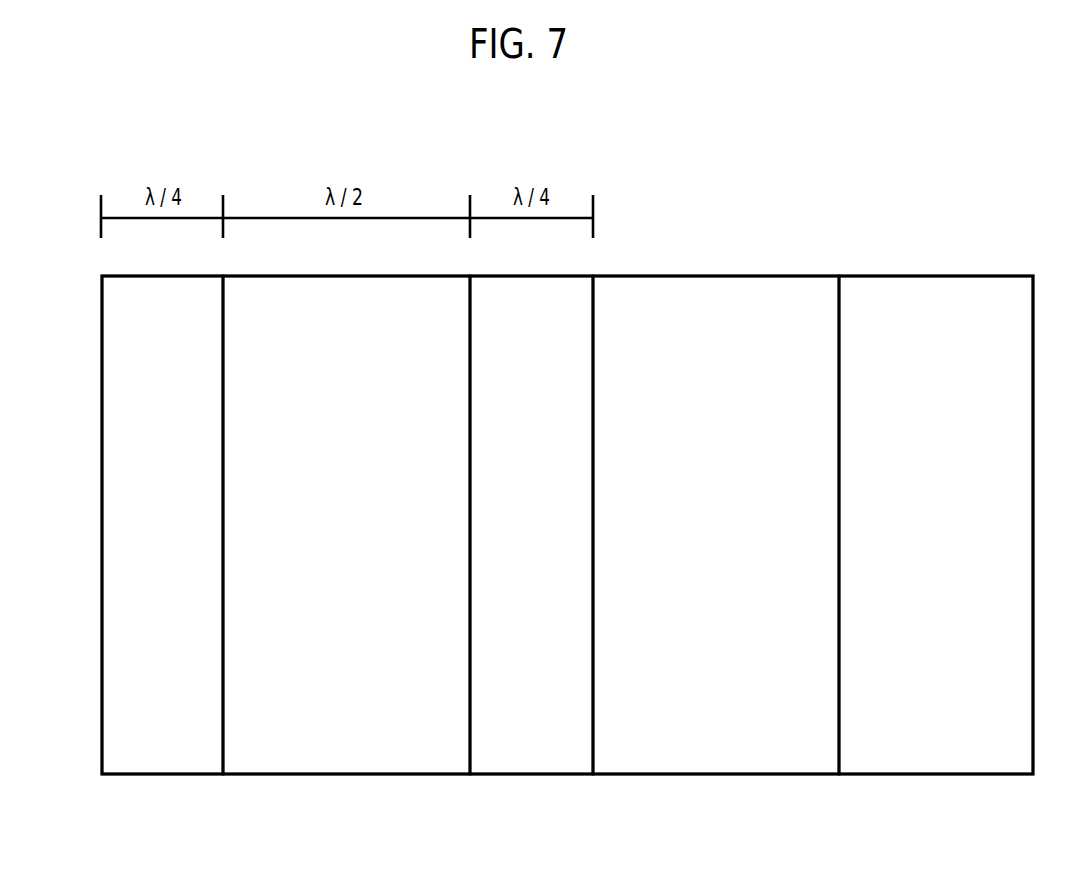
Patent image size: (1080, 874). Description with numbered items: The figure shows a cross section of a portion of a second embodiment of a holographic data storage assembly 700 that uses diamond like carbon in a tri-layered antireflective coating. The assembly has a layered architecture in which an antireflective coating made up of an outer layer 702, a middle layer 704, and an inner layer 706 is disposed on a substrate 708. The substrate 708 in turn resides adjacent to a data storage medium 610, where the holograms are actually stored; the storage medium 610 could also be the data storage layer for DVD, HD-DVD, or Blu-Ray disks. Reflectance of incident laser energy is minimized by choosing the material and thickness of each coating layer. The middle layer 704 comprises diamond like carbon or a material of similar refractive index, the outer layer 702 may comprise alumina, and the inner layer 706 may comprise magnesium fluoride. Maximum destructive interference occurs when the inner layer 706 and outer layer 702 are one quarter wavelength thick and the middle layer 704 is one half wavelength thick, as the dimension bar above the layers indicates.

The holographic data storage assembly 700 is at (709, 175).
The outer layer 702 is at (133, 762).
The middle layer 704 is at (287, 762).
The inner layer 706 is at (490, 762).
The substrate 708 is at (702, 762).
The data storage medium 610 is at (953, 530).